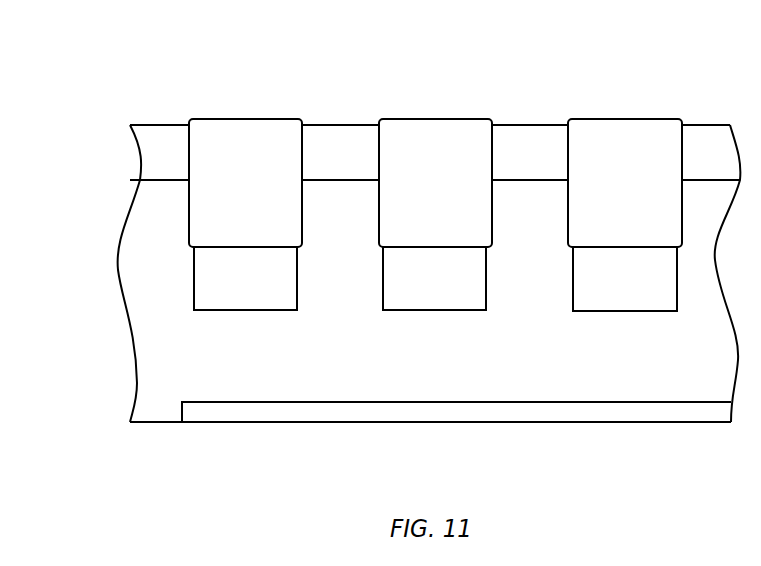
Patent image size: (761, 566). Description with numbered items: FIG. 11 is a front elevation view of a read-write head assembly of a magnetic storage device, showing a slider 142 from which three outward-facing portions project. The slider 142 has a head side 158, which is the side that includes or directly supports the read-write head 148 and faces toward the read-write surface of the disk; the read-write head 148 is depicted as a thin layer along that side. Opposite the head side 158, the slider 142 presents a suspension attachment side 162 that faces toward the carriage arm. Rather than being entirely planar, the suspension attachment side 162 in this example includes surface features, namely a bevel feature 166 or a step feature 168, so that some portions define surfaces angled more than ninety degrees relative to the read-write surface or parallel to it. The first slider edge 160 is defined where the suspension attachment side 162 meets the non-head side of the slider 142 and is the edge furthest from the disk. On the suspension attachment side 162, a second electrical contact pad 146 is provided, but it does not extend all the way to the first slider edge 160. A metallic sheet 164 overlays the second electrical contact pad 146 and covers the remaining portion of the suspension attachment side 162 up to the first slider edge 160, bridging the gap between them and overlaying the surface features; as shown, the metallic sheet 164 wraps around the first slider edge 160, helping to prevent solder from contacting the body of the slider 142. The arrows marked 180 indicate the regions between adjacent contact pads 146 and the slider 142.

The slider 142 is at (642, 382).
The second electrical contact pad 146 is at (257, 289).
The read-write head 148 is at (283, 410).
The head side 158 is at (157, 425).
The first slider edge 160 is at (169, 125).
The suspension attachment side 162 is at (148, 283).
The metallic sheet 164 is at (238, 142).
The bevel feature 166 is at (169, 152).
The step feature 168 is at (144, 70).
The gap 180 is at (185, 318).